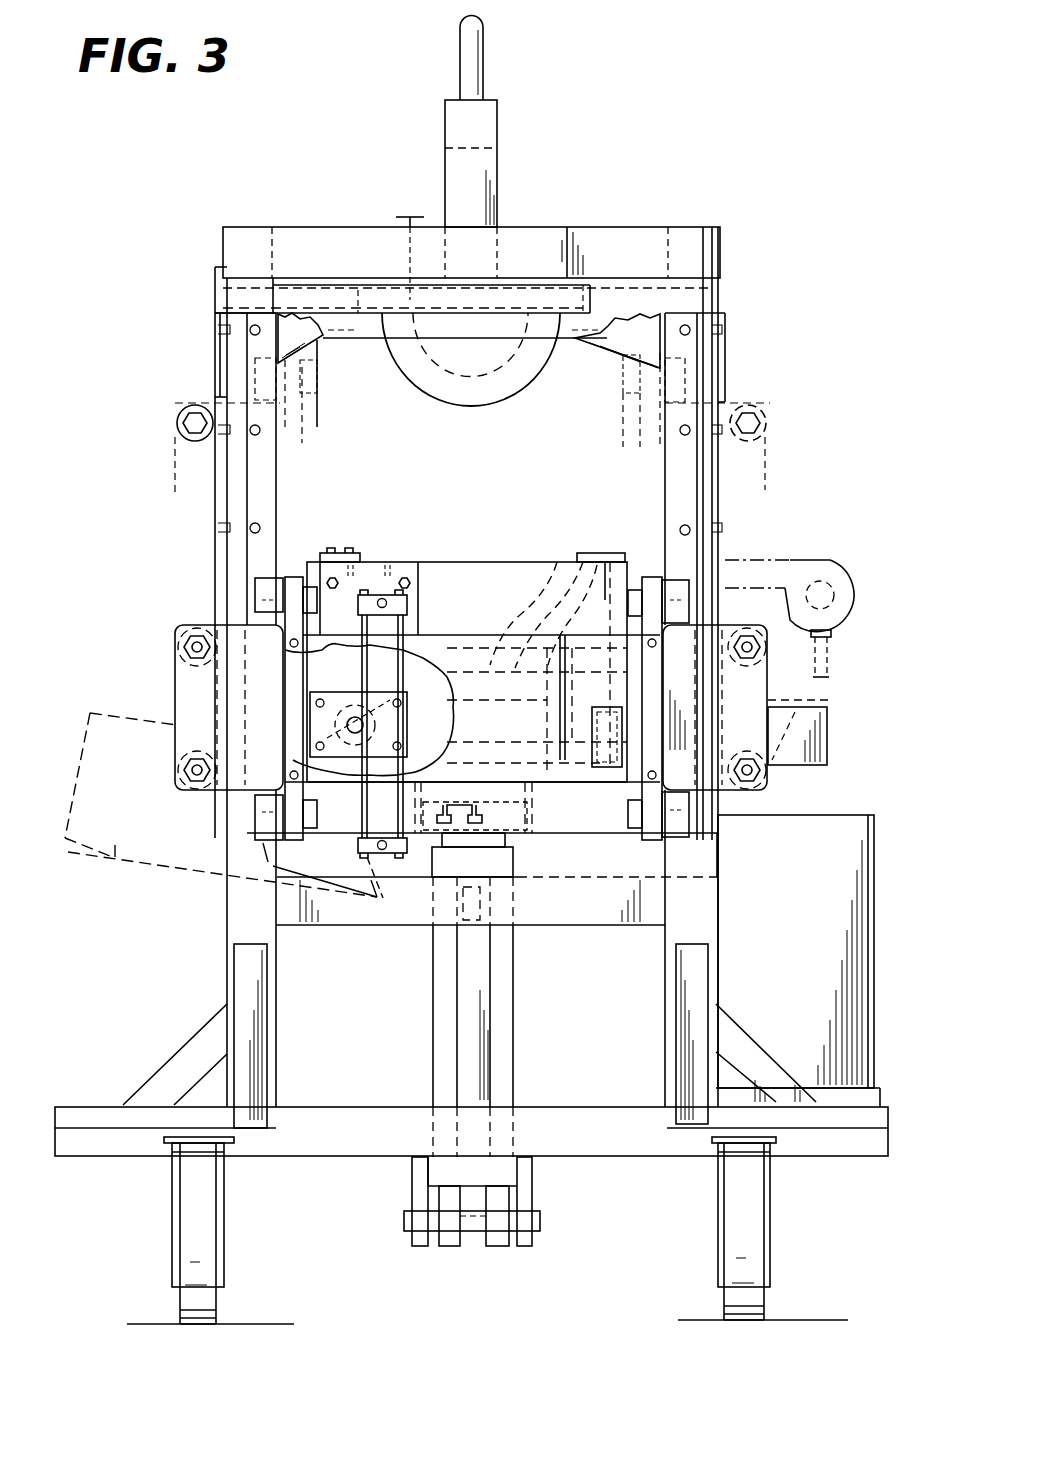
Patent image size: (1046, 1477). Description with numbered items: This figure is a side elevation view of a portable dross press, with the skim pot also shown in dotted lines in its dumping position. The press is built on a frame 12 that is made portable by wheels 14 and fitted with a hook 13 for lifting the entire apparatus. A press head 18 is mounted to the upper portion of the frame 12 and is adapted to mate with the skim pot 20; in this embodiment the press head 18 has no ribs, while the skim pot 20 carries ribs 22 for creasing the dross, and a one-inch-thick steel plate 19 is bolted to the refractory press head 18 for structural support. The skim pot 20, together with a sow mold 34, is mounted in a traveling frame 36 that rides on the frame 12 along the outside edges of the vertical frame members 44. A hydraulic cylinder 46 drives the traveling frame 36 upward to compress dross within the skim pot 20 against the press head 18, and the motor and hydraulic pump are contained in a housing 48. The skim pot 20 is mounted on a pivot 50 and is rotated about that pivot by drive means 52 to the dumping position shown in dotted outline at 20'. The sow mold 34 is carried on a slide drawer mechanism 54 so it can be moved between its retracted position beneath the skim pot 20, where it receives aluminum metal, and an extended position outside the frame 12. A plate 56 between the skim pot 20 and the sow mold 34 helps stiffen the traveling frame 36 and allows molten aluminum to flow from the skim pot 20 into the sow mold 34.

The frame 12 is at (655, 228).
The hook 13 is at (490, 52).
The wheels 14 is at (176, 1310).
The press head 18 is at (530, 372).
The steel plate 19 is at (590, 300).
The skim pot 20 is at (472, 682).
The skim pot in dumping position 20' is at (224, 775).
The ribs 22 is at (557, 562).
The sow mold 34 is at (575, 740).
The traveling frame 36 is at (175, 668).
The vertical frame members 44 is at (725, 366).
The hydraulic cylinder 46 is at (515, 991).
The housing 48 is at (807, 815).
The pivot 50 is at (353, 733).
The drive means 52 is at (407, 607).
The slide drawer mechanism 54 is at (827, 738).
The plate 56 is at (430, 690).